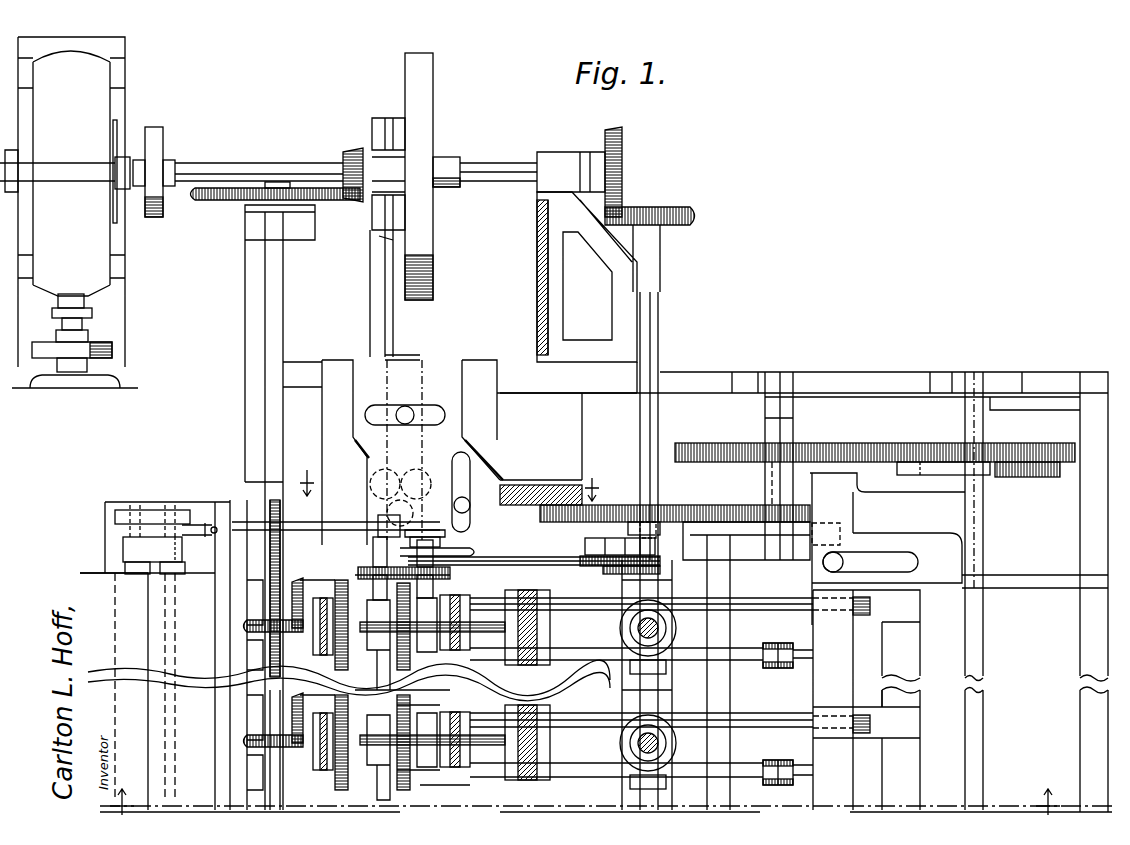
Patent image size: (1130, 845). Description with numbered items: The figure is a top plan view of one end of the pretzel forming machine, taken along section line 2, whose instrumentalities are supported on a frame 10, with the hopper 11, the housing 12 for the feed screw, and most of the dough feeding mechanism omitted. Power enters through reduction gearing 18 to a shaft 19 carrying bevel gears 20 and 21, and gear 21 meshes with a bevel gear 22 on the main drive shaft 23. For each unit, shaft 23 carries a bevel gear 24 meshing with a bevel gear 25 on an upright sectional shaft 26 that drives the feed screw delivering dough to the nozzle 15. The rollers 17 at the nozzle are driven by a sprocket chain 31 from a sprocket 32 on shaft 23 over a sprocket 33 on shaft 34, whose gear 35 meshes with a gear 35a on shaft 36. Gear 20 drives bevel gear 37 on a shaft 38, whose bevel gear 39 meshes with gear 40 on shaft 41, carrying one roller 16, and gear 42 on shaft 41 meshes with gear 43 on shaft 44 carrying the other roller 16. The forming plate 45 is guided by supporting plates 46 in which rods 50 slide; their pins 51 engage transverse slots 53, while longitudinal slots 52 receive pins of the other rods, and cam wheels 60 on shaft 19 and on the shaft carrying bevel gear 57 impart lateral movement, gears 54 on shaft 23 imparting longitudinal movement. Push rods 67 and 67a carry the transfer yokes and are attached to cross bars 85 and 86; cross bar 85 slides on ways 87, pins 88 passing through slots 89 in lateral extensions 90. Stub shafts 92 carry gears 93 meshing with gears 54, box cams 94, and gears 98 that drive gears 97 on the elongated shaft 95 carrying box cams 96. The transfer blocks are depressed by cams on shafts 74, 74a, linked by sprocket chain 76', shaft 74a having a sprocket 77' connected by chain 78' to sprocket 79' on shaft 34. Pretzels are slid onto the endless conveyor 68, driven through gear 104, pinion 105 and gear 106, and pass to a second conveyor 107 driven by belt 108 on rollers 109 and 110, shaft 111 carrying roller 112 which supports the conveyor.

The frame 10 is at (700, 374).
The reduction gearing 18 is at (118, 128).
The shaft 19 is at (278, 159).
The bevel gear 20 is at (352, 152).
The bevel gear 37 is at (232, 202).
The shaft 38 is at (284, 357).
The rod 50 is at (370, 273).
The housing 12 is at (375, 246).
The cam wheel 60 is at (432, 128).
The bevel gear 21 is at (623, 189).
The bevel gear 22 is at (680, 209).
The main drive shaft 23 is at (660, 345).
The supporting plate 46 is at (320, 423).
The pin 51 is at (405, 406).
The transverse slot 53 is at (434, 405).
The longitudinal slot 52 is at (453, 463).
The bevel gear 57 is at (470, 504).
The sprocket 77' is at (365, 486).
The sprocket chain 76' is at (377, 497).
The hopper 11 is at (450, 485).
The gear 54 is at (718, 508).
The gear 98 is at (826, 442).
The gear 97 is at (942, 450).
The box cam 96 is at (1005, 478).
The stub shaft 92 is at (770, 398).
The gear 93 is at (758, 505).
The box cam 94 is at (776, 534).
The lateral extension 90 is at (945, 541).
The slot 89 is at (893, 555).
The pin 88 is at (840, 560).
The elongated shaft 95 is at (985, 557).
The ways 87 is at (1038, 588).
The cross bar 85 is at (812, 700).
The cross bar 86 is at (913, 695).
The endless traveling conveyor 68 is at (155, 655).
The shaft 111 is at (128, 536).
The drive belt 108 is at (152, 549).
The roller 109 is at (182, 558).
The second conveyor 107 is at (110, 561).
The roller 110 is at (128, 578).
The roller 112 is at (158, 576).
The shaft 74 is at (336, 532).
The shaft 74a is at (378, 530).
The gear 35a is at (372, 566).
The gear 40 is at (290, 585).
The bevel gear 39 is at (248, 638).
The gear 42 is at (309, 660).
The gear 43 is at (276, 683).
The shaft 36 is at (342, 685).
The shaft 44 is at (412, 665).
The forming plate 45 is at (412, 684).
The shaft 34 is at (437, 590).
The gear 35 is at (458, 585).
The nozzle 15 is at (470, 632).
The shaft 41 is at (470, 615).
The roller 17 is at (460, 740).
The roller 16 is at (440, 702).
The push rod 67a is at (558, 598).
The push rod 67 is at (562, 648).
The bevel gear 25 is at (660, 606).
The upright sectional shaft 26 is at (672, 630).
The bevel gear 24 is at (662, 666).
The sprocket chain 31 is at (534, 552).
The sprocket 33 is at (444, 555).
The gear 104 is at (605, 562).
The sprocket 32 is at (656, 540).
The gear 106 is at (660, 560).
The pinion 105 is at (660, 570).
The sprocket chain 78' is at (451, 528).
The sprocket 79' is at (451, 539).
The section line 2 is at (585, 802).